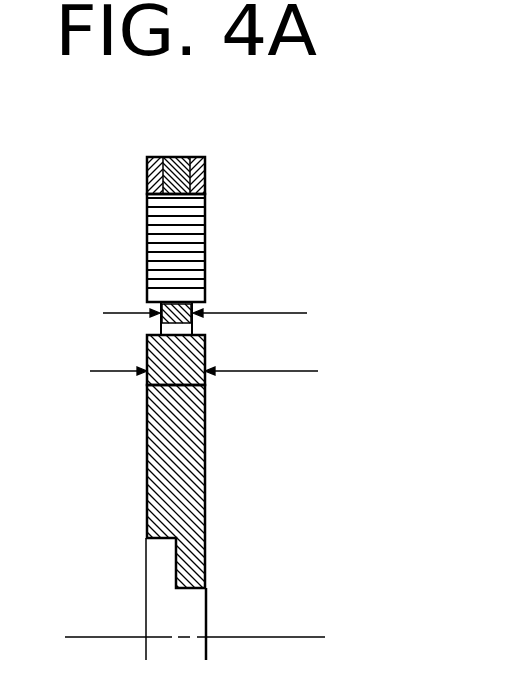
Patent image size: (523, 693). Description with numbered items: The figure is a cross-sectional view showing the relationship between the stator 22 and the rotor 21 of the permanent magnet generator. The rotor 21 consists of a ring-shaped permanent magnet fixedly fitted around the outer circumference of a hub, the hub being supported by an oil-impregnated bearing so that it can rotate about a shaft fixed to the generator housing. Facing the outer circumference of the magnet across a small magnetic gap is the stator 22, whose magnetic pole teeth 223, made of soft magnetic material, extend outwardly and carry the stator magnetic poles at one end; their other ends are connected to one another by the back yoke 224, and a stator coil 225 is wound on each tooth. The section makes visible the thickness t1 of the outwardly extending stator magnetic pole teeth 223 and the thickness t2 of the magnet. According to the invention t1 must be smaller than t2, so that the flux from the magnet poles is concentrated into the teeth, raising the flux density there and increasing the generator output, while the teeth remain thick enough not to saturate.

The stator 22 is at (288, 233).
The back yoke 224 is at (207, 177).
The stator coil 225 is at (183, 234).
The magnetic pole teeth 223 is at (170, 302).
The rotor 21 is at (284, 461).
The thickness of the stator magnetic pole teeth t1 is at (225, 312).
The thickness of the magnet t2 is at (221, 372).